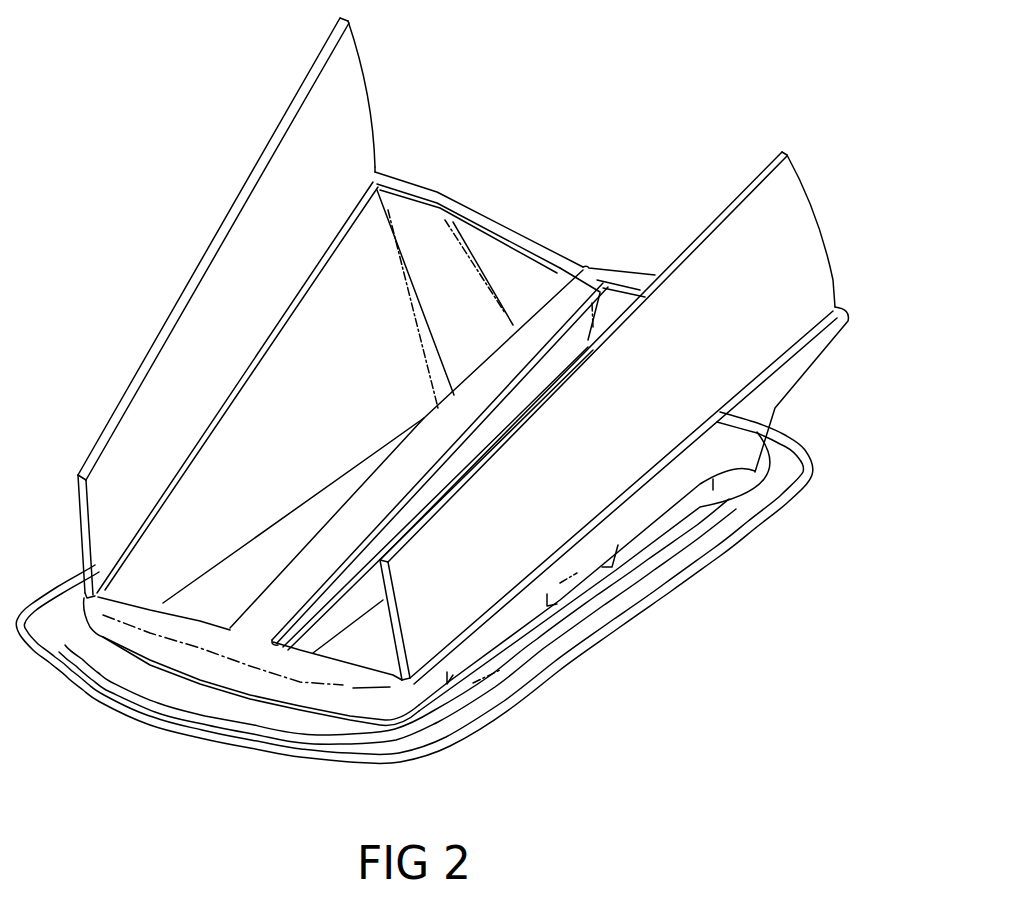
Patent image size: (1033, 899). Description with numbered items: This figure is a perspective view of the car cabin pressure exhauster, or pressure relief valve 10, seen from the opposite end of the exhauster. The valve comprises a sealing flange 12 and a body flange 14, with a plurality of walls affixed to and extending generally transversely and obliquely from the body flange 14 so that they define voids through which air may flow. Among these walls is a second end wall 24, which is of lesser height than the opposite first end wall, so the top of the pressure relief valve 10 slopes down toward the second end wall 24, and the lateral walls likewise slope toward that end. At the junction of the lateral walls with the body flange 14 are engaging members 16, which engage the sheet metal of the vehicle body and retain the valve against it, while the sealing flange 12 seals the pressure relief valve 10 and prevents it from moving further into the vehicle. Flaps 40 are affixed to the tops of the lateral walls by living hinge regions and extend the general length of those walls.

The pressure relief valve 10 is at (617, 137).
The sealing flange 12 is at (287, 755).
The body flange 14 is at (753, 470).
The engaging members 16 is at (663, 520).
The second end wall 24 is at (148, 647).
The flaps 40 is at (199, 263).